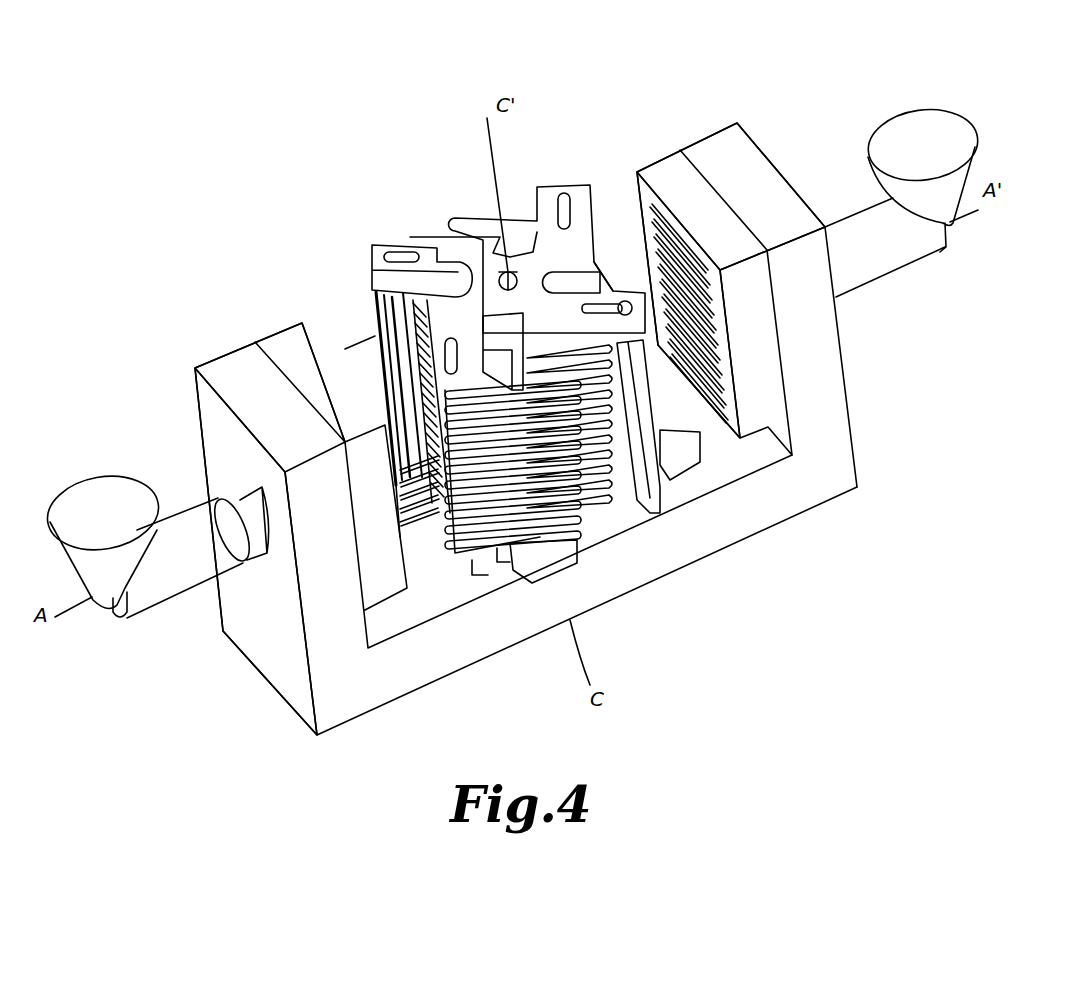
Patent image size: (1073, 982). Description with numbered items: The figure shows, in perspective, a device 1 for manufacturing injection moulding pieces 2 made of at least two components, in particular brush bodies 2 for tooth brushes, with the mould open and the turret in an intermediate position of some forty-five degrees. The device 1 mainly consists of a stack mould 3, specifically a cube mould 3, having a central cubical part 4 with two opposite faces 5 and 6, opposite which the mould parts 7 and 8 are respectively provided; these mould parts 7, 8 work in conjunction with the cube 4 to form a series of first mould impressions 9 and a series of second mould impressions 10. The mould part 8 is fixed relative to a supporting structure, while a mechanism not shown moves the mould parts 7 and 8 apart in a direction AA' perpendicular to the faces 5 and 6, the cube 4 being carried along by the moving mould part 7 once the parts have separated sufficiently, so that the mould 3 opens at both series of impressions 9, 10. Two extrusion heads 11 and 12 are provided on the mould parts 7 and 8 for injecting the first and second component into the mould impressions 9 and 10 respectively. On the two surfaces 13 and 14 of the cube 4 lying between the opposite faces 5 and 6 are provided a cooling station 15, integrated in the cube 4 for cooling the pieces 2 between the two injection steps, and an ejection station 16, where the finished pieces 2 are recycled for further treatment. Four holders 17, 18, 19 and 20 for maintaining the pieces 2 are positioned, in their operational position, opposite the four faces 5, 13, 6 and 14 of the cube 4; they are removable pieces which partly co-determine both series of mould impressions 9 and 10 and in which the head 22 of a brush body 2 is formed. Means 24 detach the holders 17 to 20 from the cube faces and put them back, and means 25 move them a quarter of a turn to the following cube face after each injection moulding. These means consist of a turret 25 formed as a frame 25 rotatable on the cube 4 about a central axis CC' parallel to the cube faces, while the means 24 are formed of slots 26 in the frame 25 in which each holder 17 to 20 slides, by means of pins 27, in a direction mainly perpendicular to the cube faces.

The device 1 is at (1041, 106).
The injection moulding piece 2 is at (585, 545).
The stack mould 3 is at (360, 752).
The central cubical part 4 is at (440, 297).
The face of the cube 5 is at (613, 235).
The face of the cube 6 is at (384, 300).
The mould part 7 is at (668, 172).
The mould part 8 is at (308, 365).
The first mould impressions 9 is at (722, 440).
The second mould impressions 10 is at (462, 540).
The extrusion head 11 is at (912, 150).
The extrusion head 12 is at (110, 512).
The surface of the cube 13 is at (596, 545).
The surface of the cube 14 is at (381, 180).
The cooling station 15 is at (498, 335).
The ejection station 16 is at (364, 377).
The holder 17 is at (633, 402).
The holder 18 is at (472, 600).
The holder 19 is at (372, 268).
The holder 20 is at (607, 226).
The head of the brush body 22 is at (497, 560).
The means to detach the holders 24 is at (395, 240).
The turret 25 is at (556, 318).
The slots 26 is at (598, 275).
The pins 27 is at (568, 188).